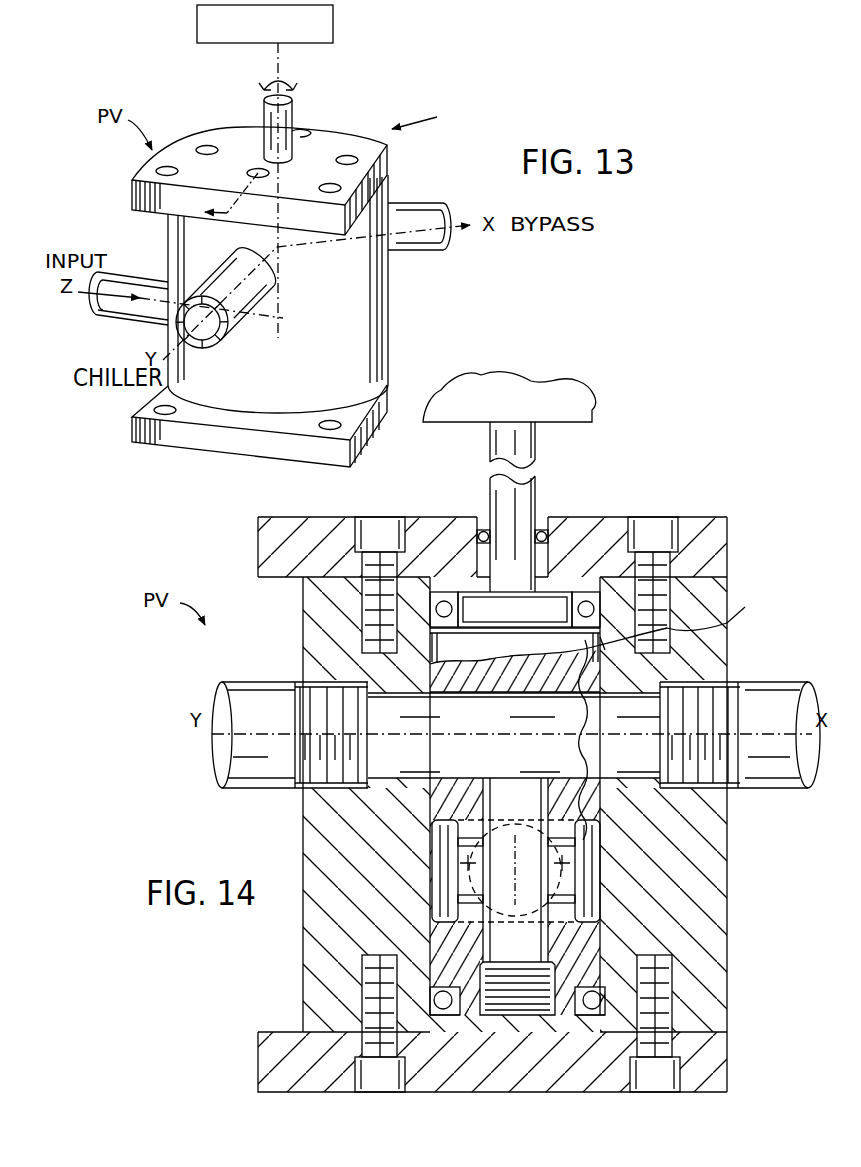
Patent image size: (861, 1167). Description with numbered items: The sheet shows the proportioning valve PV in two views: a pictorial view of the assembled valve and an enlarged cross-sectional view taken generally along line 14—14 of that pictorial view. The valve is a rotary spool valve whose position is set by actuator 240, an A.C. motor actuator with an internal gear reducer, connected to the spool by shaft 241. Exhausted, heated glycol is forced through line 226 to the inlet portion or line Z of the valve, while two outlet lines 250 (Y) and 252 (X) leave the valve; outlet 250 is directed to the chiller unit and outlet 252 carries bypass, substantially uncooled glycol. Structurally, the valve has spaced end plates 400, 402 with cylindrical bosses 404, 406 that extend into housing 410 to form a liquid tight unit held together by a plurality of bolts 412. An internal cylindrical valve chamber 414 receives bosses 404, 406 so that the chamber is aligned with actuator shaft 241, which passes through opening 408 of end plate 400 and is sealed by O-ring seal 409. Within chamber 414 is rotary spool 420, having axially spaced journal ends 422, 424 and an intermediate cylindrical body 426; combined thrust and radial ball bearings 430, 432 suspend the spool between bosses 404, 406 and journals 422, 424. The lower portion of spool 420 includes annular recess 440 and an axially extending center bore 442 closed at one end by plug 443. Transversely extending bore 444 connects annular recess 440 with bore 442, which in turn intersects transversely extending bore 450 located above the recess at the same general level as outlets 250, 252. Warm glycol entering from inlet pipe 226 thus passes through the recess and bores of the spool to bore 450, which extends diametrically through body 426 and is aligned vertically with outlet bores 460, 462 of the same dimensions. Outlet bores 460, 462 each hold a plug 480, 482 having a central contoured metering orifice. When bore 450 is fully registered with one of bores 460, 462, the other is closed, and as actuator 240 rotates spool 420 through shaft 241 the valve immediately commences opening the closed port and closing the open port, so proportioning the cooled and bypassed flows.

In FIG. 13, the section line 14— 14 is at (316, 223).
In FIG. 13, the inlet line 226 is at (108, 318).
In FIG. 14, the inlet line 226 is at (600, 822).
In FIG. 13, the actuator 240 is at (333, 42).
In FIG. 14, the actuator 240 is at (585, 410).
In FIG. 13, the shaft 241 is at (293, 120).
In FIG. 14, the shaft 241 is at (536, 490).
In FIG. 13, the outlet line (Y) 250 is at (243, 330).
In FIG. 14, the outlet line (Y) 250 is at (250, 686).
In FIG. 13, the outlet line (X) 252 is at (418, 252).
In FIG. 14, the outlet line (X) 252 is at (783, 690).
In FIG. 13, the end plate 400 is at (388, 172).
In FIG. 14, the end plate 400 is at (702, 525).
In FIG. 13, the end plate 402 is at (252, 440).
In FIG. 14, the end plate 402 is at (727, 1055).
In FIG. 14, the cylindrical boss 404 is at (597, 592).
In FIG. 14, the cylindrical boss 406 is at (606, 1020).
In FIG. 14, the opening 408 is at (545, 517).
In FIG. 14, the O-ring seal 409 is at (478, 534).
In FIG. 14, the housing 410 is at (727, 595).
In FIG. 14, the bolts 412 is at (388, 532).
In FIG. 14, the internal cylindrical valve chamber 414 is at (603, 645).
In FIG. 14, the rotary spool 420 is at (608, 804).
In FIG. 14, the journal end 422 is at (535, 595).
In FIG. 14, the journal end 424 is at (590, 1013).
In FIG. 14, the intermediate cylindrical body 426 is at (428, 680).
In FIG. 14, the combined thrust and radial ball bearing 430 is at (440, 605).
In FIG. 14, the combined thrust and radial ball bearing 432 is at (445, 988).
In FIG. 14, the annular recess 440 is at (578, 880).
In FIG. 14, the axially extending center bore 442 is at (578, 928).
In FIG. 14, the plug 443 is at (512, 1005).
In FIG. 14, the transversely extending bore 444 is at (456, 890).
In FIG. 14, the transversely extending bore 450 is at (438, 776).
In FIG. 14, the outlet bore 460 is at (398, 778).
In FIG. 14, the outlet bore 462 is at (712, 682).
In FIG. 14, the plug 480 is at (418, 730).
In FIG. 14, the plug 482 is at (590, 742).